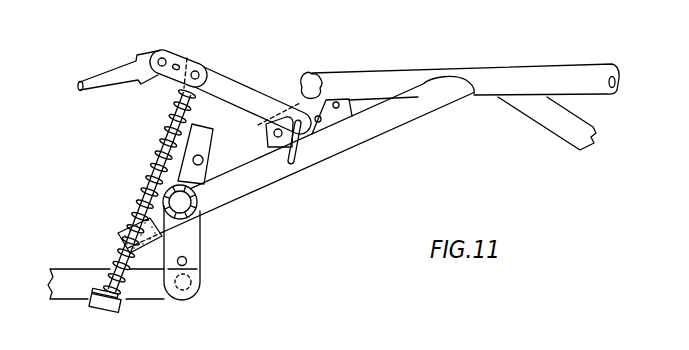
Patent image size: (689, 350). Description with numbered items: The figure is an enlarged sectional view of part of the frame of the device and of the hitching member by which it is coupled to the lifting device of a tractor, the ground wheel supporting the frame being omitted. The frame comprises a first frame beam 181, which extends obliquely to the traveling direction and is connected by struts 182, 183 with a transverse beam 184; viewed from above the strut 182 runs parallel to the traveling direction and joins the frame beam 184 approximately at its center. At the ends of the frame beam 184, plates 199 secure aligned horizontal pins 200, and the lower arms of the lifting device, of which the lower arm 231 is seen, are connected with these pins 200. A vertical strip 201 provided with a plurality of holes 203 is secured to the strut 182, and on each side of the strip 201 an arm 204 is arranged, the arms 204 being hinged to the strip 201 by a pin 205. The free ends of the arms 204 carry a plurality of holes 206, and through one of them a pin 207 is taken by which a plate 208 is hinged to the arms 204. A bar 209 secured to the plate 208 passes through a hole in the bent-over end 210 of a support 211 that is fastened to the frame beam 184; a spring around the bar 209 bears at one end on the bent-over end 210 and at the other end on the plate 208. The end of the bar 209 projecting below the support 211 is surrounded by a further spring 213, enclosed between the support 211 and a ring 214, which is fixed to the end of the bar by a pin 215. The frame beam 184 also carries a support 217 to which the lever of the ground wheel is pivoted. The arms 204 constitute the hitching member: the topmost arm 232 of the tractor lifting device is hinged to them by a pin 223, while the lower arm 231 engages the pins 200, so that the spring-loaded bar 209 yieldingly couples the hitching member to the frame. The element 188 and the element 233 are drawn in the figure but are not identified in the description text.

The first frame beam 181 is at (553, 72).
The strut 182 is at (410, 110).
The branch tube 188 is at (548, 120).
The strut 183 is at (208, 149).
The transverse beam 184 is at (203, 205).
The plate 199 is at (199, 262).
The horizontal pin 200 is at (203, 292).
The vertical strip 201 is at (312, 106).
The hole 203 is at (321, 113).
The arm 204 is at (237, 93).
The pin 205 is at (297, 164).
The hole 206 is at (179, 63).
The pin 207 is at (201, 71).
The plate 208 is at (181, 90).
The bar 209 is at (158, 136).
The bent-over end 210 is at (123, 233).
The support 211 is at (130, 212).
The spring 213 is at (117, 256).
The ring 214 is at (120, 312).
The pin 215 is at (95, 303).
The support 217 is at (186, 262).
The pin 223 is at (212, 156).
The lower arm 231 is at (66, 276).
The topmost arm 232 is at (97, 80).
The lever 233 is at (163, 56).